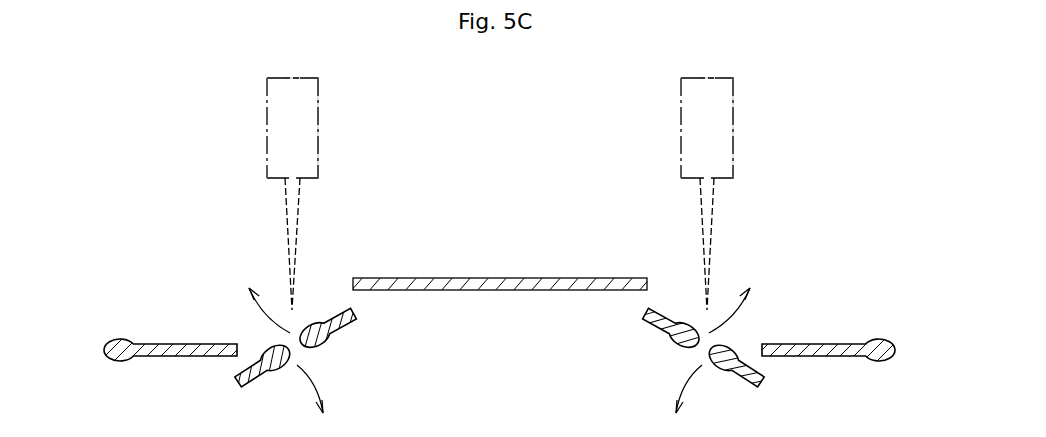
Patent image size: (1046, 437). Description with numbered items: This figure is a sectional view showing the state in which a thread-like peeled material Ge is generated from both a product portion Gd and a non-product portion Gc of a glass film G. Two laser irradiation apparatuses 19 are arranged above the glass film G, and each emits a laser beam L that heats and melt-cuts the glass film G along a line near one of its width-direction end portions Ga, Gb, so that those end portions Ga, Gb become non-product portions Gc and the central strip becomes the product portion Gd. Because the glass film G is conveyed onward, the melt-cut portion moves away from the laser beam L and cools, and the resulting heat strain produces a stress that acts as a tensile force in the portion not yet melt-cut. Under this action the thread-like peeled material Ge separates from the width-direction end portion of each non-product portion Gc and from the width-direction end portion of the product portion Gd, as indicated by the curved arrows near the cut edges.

The laser irradiation apparatus 19 is at (318, 103).
The laser beam L is at (298, 225).
The glass film G is at (523, 242).
The end portion of the glass film Ga is at (106, 346).
The end portion of the glass film Gb is at (893, 346).
The non-product portion Gc is at (183, 343).
The product portion Gd is at (472, 277).
The thread-like peeled material Ge is at (322, 345).